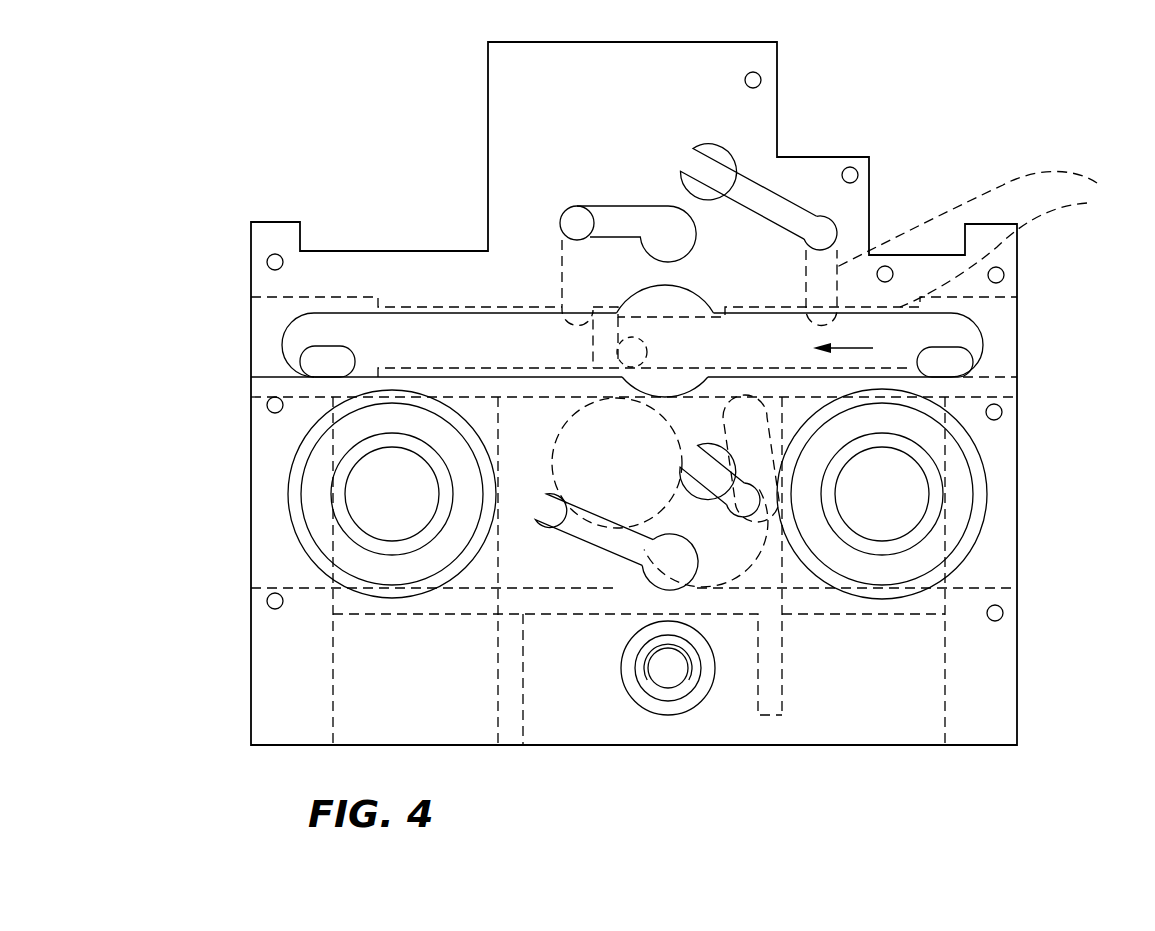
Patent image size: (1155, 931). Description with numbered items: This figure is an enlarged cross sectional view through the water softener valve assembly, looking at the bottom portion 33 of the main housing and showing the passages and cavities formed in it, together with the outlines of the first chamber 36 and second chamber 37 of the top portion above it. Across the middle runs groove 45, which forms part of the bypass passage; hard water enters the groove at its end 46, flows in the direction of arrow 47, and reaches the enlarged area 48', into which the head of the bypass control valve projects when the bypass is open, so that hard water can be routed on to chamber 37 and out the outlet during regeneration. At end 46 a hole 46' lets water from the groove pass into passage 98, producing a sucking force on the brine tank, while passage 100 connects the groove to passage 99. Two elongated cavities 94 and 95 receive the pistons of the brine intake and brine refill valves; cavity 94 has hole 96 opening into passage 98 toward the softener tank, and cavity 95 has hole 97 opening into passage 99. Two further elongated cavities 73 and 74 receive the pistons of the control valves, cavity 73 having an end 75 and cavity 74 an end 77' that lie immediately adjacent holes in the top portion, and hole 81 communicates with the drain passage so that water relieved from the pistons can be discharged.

The bottom portion 33 is at (272, 232).
The cavity 94 is at (680, 145).
The cavity 95 is at (667, 232).
The hole 96 is at (822, 232).
The hole 97 is at (577, 215).
The passage 98 is at (983, 239).
The passage 99 is at (460, 307).
The groove 45 is at (862, 333).
The end of groove 46 is at (709, 324).
The hole 46' is at (1020, 359).
The arrow 47 is at (859, 348).
The enlarged area 48' is at (686, 326).
The passage 100 is at (323, 365).
The cavity 73 is at (660, 447).
The second chamber 37 is at (320, 506).
The first chamber 36 is at (958, 514).
The end of cavity 75 is at (740, 498).
The end of cavity 77' is at (579, 537).
The cavity 74 is at (660, 578).
The hole 81 is at (697, 705).